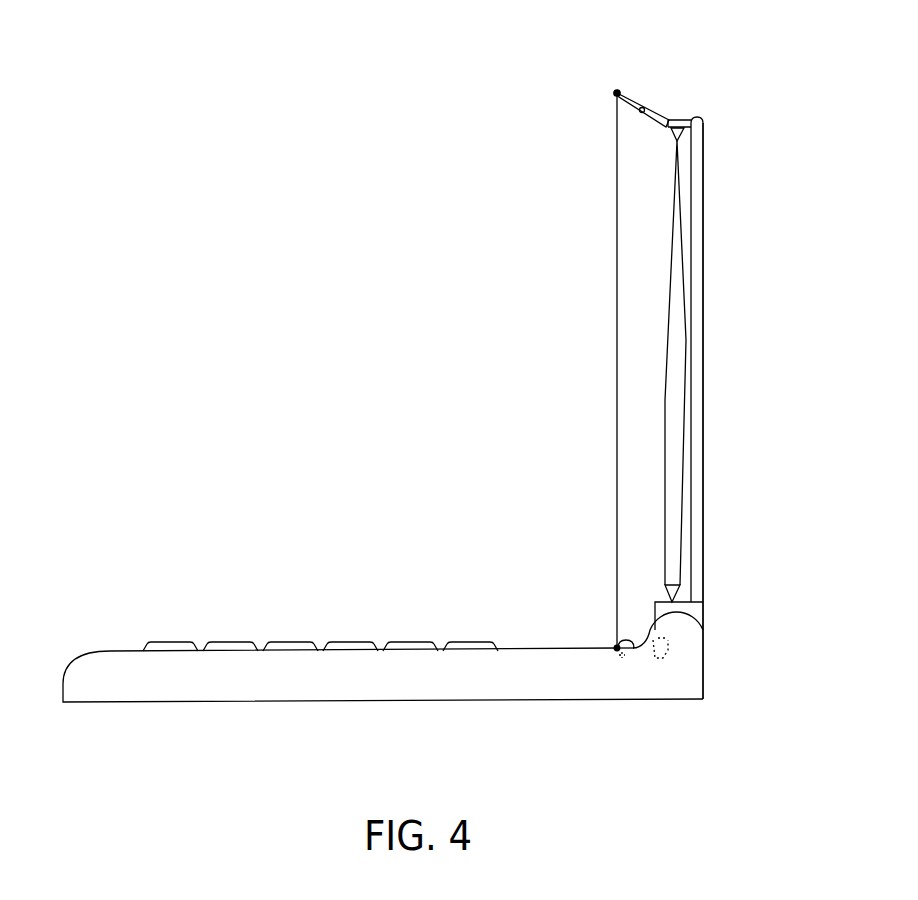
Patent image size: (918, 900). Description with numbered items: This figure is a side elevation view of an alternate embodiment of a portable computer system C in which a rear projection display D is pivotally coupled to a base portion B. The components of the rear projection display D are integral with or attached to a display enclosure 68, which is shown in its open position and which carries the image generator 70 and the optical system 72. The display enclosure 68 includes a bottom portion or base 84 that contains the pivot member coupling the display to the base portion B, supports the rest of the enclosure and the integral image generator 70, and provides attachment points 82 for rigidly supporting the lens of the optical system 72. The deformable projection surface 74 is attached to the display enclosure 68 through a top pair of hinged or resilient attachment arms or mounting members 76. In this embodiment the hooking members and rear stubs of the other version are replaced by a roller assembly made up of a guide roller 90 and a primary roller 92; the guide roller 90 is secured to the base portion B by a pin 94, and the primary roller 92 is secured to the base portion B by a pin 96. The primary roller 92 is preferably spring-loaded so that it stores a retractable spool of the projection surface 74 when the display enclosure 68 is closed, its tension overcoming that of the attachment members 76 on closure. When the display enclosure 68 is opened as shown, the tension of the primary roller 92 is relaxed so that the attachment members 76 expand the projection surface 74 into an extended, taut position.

The display enclosure 68 is at (708, 167).
The image generator 70 is at (708, 167).
The optical system 72 is at (683, 245).
The projection surface 74 is at (617, 178).
The top pair of hinged or resilient attachment arms 76 is at (658, 113).
The attachment points 82 is at (672, 130).
The base 84 is at (698, 612).
The guide roller 90 is at (620, 642).
The primary roller 92 is at (670, 643).
The pin 94 is at (628, 653).
The pin 96 is at (670, 650).
The base portion B is at (385, 685).
The portable computer system C is at (318, 271).
The rear projection display D is at (593, 62).